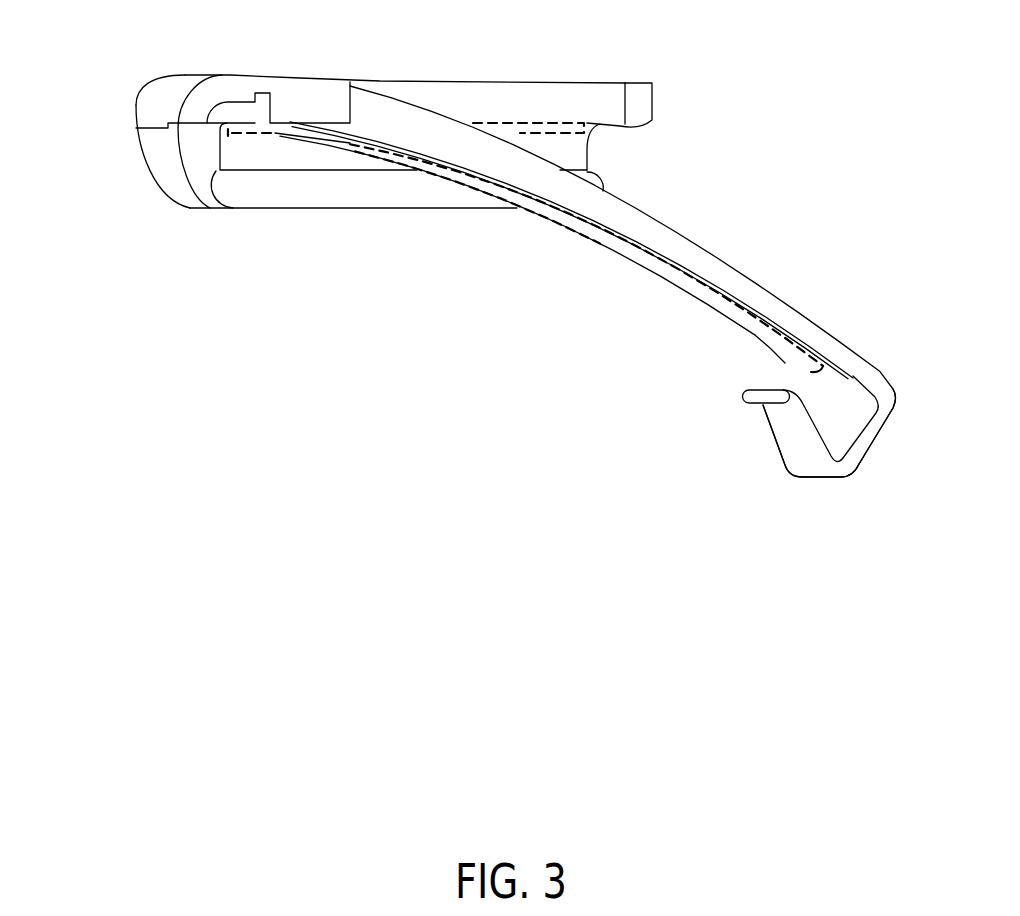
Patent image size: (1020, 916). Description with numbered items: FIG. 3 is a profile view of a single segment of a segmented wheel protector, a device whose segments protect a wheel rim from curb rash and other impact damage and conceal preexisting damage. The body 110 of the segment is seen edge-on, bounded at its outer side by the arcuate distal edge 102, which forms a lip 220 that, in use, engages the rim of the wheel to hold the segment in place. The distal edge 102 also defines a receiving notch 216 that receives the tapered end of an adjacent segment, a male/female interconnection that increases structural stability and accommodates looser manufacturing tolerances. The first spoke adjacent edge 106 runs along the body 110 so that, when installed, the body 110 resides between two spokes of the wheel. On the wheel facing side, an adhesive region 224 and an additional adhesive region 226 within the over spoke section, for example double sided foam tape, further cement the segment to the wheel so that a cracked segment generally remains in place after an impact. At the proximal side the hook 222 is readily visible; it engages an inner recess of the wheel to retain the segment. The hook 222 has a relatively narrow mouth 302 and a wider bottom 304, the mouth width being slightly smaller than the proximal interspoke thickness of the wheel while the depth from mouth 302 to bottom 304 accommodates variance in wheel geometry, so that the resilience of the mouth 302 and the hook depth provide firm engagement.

The distal edge 102 is at (137, 105).
The first spoke adjacent edge 106 is at (670, 243).
The body 110 is at (780, 297).
The receiving notch 216 is at (217, 182).
The lip 220 is at (303, 188).
The hook 222 is at (827, 465).
The adhesive region 224 is at (597, 232).
The additional adhesive region 226 is at (535, 133).
The mouth 302 is at (800, 385).
The bottom 304 is at (843, 445).